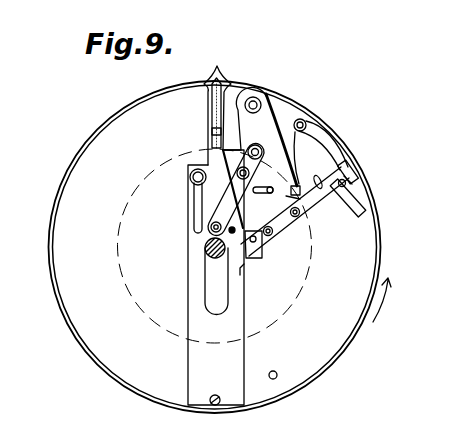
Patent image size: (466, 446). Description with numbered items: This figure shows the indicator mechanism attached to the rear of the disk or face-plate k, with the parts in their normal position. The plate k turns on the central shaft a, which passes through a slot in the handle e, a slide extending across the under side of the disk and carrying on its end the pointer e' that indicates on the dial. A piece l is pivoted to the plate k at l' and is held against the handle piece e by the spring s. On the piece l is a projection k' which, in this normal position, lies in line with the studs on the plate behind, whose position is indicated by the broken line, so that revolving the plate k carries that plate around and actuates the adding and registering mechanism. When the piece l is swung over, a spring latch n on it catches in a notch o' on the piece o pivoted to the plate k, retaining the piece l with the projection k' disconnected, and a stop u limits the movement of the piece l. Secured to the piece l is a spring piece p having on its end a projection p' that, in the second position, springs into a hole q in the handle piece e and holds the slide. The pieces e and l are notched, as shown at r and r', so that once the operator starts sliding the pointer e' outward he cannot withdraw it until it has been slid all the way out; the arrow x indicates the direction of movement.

The disk k is at (215, 247).
The handle e is at (216, 277).
The pointer e' is at (226, 137).
The pivoted piece l is at (261, 141).
The pivot l' is at (265, 89).
The spring s is at (284, 148).
The hole q is at (211, 232).
The spring piece p is at (206, 201).
The projection p' is at (199, 229).
The shaft a is at (215, 257).
The projection r is at (262, 250).
The notch r' is at (258, 275).
The spring latch n is at (296, 216).
The projection k' is at (313, 154).
The stop u is at (341, 160).
The pivoted piece o is at (349, 194).
The notch o' is at (346, 207).
The direction arrow x is at (388, 300).